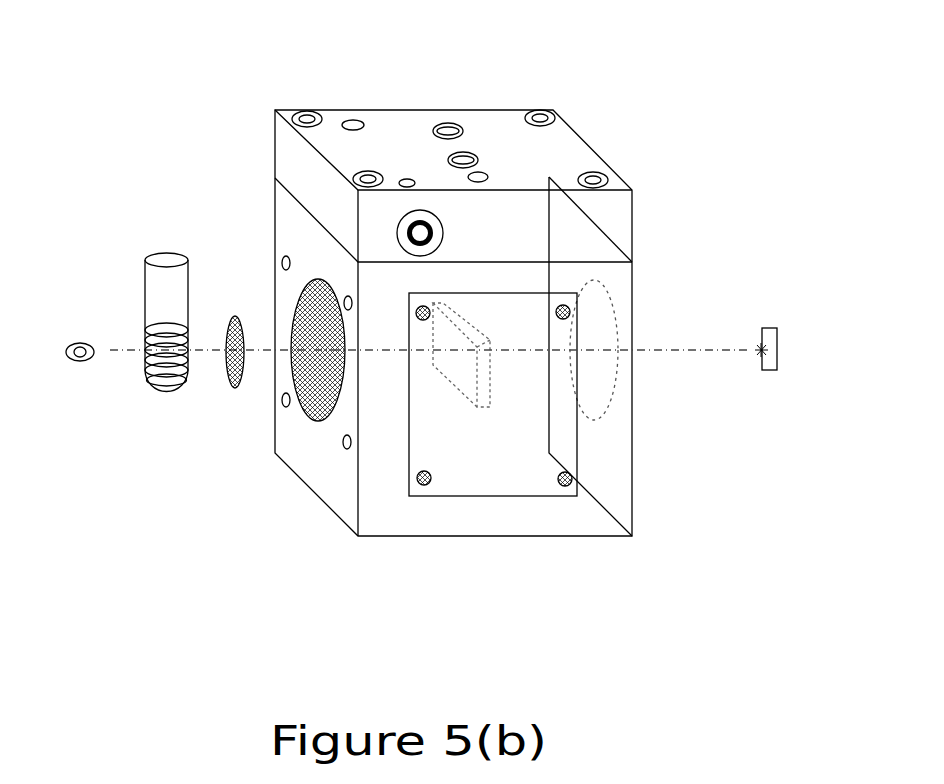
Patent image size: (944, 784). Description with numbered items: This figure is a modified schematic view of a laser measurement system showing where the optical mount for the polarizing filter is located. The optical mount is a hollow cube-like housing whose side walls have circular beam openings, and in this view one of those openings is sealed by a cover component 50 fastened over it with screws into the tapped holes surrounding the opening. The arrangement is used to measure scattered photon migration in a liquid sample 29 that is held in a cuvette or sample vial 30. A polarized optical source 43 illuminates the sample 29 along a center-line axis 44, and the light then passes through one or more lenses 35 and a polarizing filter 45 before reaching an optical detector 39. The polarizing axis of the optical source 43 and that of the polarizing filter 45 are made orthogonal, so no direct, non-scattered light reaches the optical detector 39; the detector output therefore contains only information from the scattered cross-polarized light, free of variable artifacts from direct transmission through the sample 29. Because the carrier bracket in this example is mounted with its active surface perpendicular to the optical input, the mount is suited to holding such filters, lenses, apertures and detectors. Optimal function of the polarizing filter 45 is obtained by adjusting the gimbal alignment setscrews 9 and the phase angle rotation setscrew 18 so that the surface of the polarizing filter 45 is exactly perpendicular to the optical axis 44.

The gimbal alignment setscrews 9 is at (362, 121).
The phase angle rotation setscrew 18 is at (433, 233).
The liquid sample 29 is at (156, 393).
The sample vial 30 is at (151, 256).
The lenses 35 is at (231, 389).
The optical detector 39 is at (784, 356).
The polarized optical source 43 is at (79, 364).
The center-line axis 44 is at (694, 352).
The polarizing filter 45 is at (483, 414).
The cover component 50 is at (468, 498).